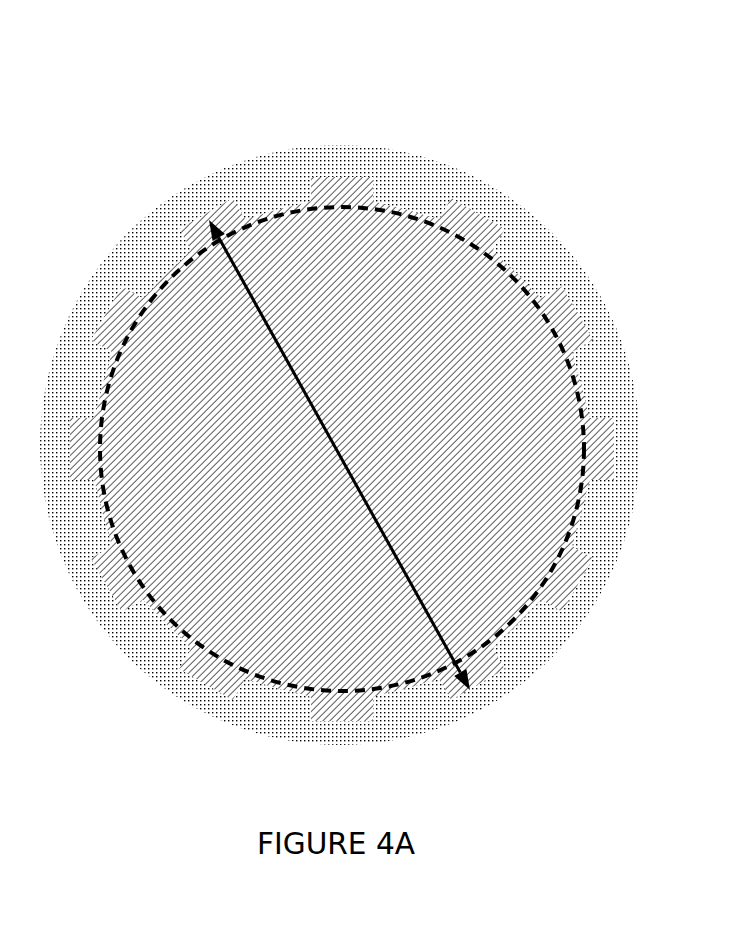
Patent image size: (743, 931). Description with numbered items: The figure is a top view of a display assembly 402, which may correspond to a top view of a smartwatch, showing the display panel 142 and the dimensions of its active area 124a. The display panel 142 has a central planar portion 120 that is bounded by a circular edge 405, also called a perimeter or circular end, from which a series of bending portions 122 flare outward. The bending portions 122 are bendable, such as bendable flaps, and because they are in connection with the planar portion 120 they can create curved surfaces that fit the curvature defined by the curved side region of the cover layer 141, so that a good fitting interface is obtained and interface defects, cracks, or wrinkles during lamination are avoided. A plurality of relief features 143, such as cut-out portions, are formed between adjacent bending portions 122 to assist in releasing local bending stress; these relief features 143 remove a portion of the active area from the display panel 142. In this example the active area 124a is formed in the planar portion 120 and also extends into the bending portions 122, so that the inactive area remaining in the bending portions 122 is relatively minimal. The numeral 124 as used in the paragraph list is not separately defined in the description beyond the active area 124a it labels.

The display assembly 402 is at (361, 98).
The cover layer 141 is at (440, 187).
The relief features 143 is at (275, 172).
The planar portion 120 is at (492, 590).
The bending portions 122 is at (585, 552).
The gear body 124 is at (568, 585).
The display panel 142 is at (500, 290).
The circular edge 405 is at (160, 266).
The active area 124a is at (339, 455).